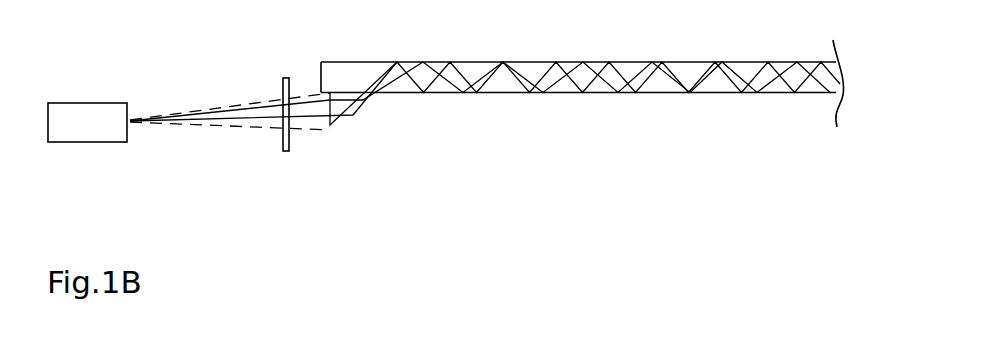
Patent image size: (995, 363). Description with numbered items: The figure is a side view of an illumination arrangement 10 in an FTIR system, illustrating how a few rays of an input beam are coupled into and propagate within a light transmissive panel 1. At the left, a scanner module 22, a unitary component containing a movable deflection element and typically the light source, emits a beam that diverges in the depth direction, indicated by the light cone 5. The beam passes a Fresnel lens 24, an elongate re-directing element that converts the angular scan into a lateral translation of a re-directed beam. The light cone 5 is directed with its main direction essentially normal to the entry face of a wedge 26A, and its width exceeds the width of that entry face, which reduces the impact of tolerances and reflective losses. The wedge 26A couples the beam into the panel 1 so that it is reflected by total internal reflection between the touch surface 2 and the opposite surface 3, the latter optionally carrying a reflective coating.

The light transmissive panel 1 is at (582, 81).
The touch surface 2 is at (475, 60).
The opposite surface 3 is at (512, 95).
The light cone 5 is at (298, 130).
The illumination arrangement 10 is at (237, 201).
The scanner module 22 is at (98, 102).
The Fresnel lens 24 is at (290, 146).
The wedge 26A is at (362, 110).